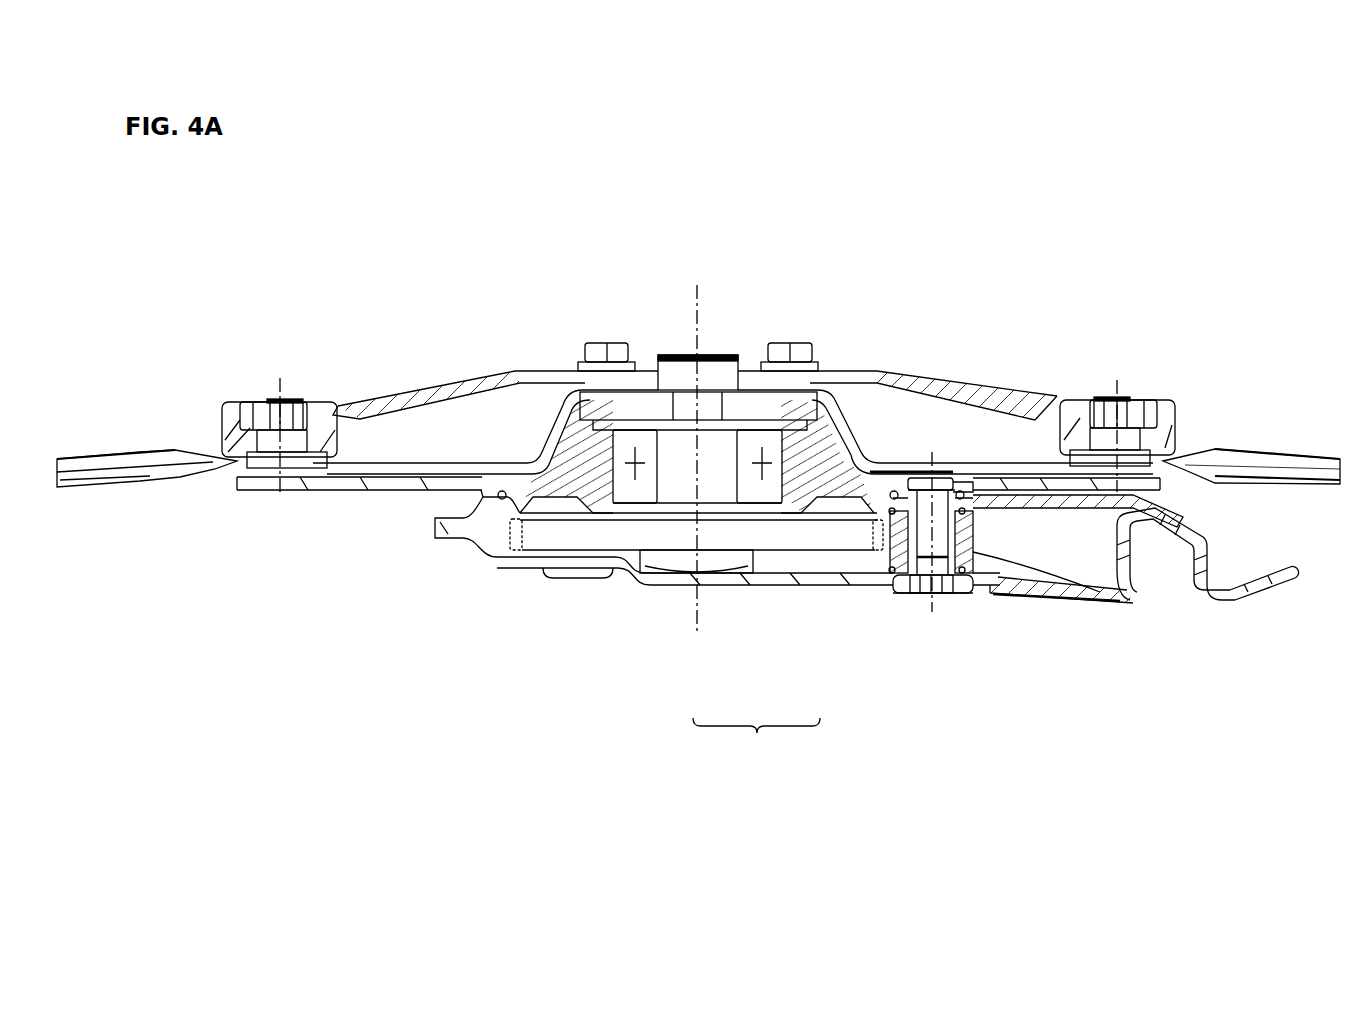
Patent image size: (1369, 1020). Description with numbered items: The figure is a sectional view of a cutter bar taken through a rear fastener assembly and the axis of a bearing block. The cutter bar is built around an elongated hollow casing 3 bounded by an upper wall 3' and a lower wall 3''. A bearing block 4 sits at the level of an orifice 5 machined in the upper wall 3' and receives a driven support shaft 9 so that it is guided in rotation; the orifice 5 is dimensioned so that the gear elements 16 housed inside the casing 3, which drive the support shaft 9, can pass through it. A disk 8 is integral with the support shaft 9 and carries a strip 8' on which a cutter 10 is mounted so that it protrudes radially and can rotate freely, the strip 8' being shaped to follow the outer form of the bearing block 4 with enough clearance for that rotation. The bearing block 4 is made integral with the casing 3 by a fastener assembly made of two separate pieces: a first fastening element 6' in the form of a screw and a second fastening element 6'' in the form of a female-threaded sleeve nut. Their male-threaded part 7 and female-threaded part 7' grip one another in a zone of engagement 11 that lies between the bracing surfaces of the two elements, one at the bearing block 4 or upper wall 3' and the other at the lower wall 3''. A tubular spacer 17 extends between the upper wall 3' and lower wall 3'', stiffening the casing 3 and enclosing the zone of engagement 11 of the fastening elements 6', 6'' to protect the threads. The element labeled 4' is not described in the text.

The elongated hollow casing 3 is at (756, 745).
The upper wall 3' is at (706, 610).
The lower wall 3'' is at (885, 595).
The bearing block 4 is at (697, 392).
The bearing element part 4' is at (974, 413).
The orifice 5 is at (762, 513).
The first fastening element 6' is at (939, 411).
The second fastening element 6'' is at (941, 629).
The male-threaded part 7 is at (1176, 554).
The female-threaded part 7' is at (1264, 583).
The disk 8 is at (695, 345).
The strip 8' is at (733, 362).
The support shaft 9 is at (668, 366).
The cutter 10 is at (1247, 455).
The zone of engagement 11 is at (1192, 535).
The gear elements 16 is at (517, 550).
The tubular spacer 17 is at (1093, 600).